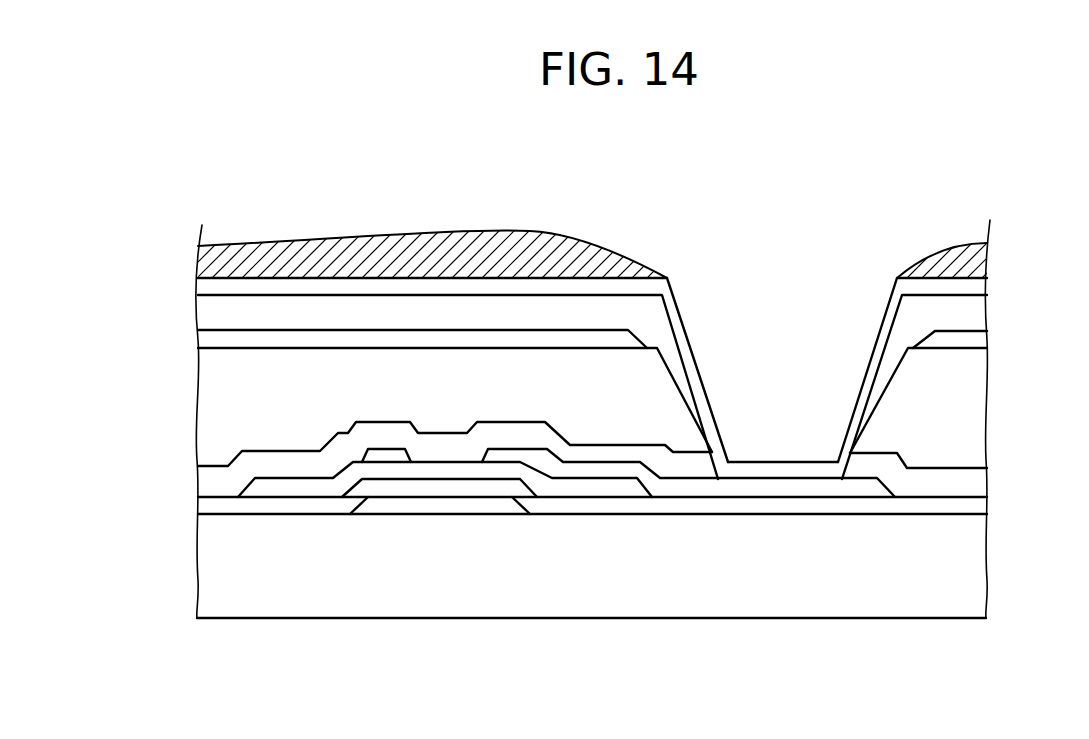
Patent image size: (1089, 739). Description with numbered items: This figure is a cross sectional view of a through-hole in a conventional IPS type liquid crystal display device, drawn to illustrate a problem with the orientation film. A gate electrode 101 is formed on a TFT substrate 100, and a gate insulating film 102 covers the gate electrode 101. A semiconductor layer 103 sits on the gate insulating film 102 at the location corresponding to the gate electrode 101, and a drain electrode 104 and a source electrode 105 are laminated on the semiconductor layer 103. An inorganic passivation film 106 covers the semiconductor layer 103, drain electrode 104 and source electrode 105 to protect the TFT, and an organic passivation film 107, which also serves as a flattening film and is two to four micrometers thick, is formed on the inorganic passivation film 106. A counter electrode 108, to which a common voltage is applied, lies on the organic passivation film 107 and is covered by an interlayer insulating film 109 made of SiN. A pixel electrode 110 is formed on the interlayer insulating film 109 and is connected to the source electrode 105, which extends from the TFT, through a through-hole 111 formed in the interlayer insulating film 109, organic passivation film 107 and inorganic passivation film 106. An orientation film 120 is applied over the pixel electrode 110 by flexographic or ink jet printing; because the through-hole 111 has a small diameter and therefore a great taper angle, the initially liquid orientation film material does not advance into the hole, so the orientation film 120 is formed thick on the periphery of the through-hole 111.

The TFT substrate 100 is at (988, 572).
The gate electrode 101 is at (440, 510).
The gate insulating film 102 is at (988, 508).
The semiconductor layer 103 is at (495, 478).
The drain electrode 104 is at (385, 458).
The source electrode 105 is at (597, 468).
The inorganic passivation film 106 is at (210, 483).
The organic passivation film 107 is at (216, 406).
The counter electrode 108 is at (210, 338).
The interlayer insulating film 109 is at (210, 310).
The pixel electrode 110 is at (210, 287).
The through-hole 111 is at (778, 325).
The orientation film 120 is at (534, 232).